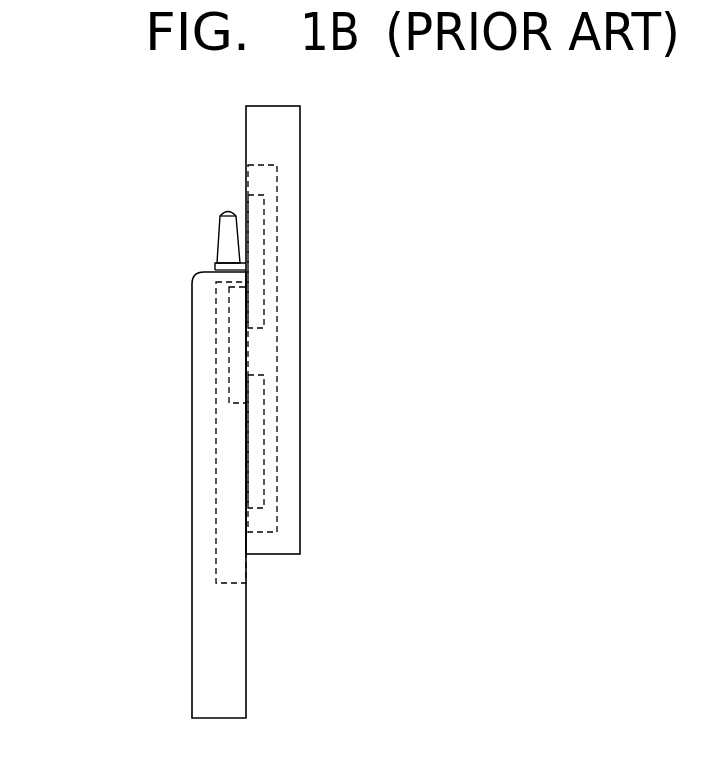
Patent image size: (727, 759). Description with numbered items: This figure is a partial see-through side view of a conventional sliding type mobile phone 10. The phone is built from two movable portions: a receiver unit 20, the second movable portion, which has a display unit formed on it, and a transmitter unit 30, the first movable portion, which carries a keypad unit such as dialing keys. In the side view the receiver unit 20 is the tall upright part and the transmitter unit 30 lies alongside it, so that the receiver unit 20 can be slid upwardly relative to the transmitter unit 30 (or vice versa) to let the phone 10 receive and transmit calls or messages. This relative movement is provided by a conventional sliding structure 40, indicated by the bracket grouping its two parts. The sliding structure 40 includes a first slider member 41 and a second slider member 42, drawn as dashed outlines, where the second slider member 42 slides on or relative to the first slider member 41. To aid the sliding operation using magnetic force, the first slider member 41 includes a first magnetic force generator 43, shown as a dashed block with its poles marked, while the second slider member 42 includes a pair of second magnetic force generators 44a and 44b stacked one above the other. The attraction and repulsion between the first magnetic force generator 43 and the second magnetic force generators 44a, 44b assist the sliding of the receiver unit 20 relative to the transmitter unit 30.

The sliding type mobile phone 10 is at (135, 232).
The receiver unit 20 is at (287, 152).
The transmitter unit 30 is at (205, 663).
The sliding structure 40 is at (319, 374).
The first slider member 41 is at (213, 500).
The second slider member 42 is at (277, 455).
The first magnetic force generator 43 is at (235, 336).
The second magnetic force generator 44a is at (258, 256).
The second magnetic force generator 44b is at (258, 428).